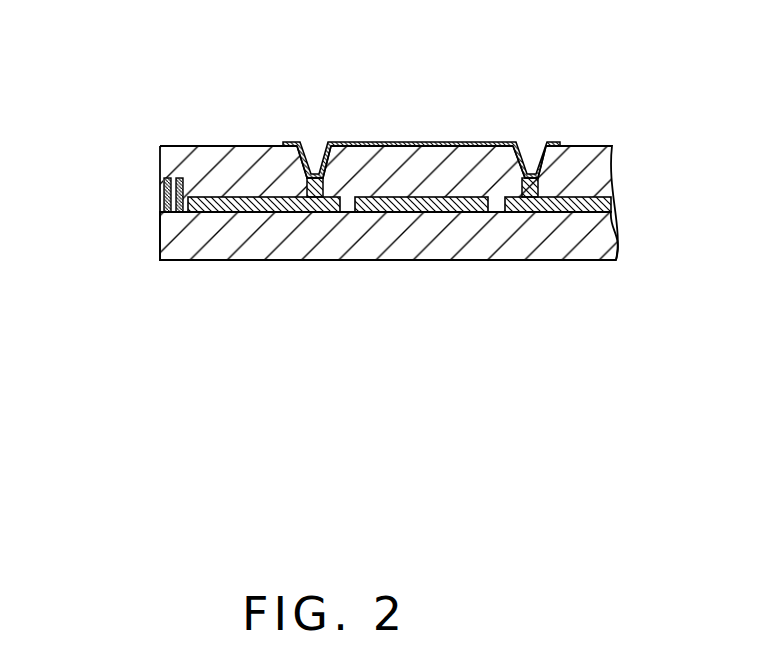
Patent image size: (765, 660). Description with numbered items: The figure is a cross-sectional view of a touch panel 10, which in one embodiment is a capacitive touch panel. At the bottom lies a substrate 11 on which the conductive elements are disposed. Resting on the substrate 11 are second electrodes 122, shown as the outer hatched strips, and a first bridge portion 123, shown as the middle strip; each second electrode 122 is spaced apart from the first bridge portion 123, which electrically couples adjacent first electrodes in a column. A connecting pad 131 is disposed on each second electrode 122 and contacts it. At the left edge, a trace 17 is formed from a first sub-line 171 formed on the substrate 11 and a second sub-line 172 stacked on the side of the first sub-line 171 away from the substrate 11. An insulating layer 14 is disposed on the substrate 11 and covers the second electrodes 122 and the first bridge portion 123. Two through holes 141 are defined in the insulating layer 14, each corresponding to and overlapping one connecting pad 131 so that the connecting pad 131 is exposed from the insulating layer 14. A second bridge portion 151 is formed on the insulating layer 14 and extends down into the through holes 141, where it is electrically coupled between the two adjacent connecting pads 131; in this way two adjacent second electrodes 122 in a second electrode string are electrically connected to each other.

The touch panel 10 is at (238, 44).
The substrate 11 is at (180, 247).
The insulating layer 14 is at (258, 147).
The through hole 141 is at (314, 136).
The second bridge portion 151 is at (417, 145).
The trace 17 is at (56, 136).
The first sub-line 171 is at (168, 203).
The second sub-line 172 is at (162, 172).
The second electrode 122 is at (275, 205).
The first bridge portion 123 is at (436, 208).
The connecting pad 131 is at (317, 186).